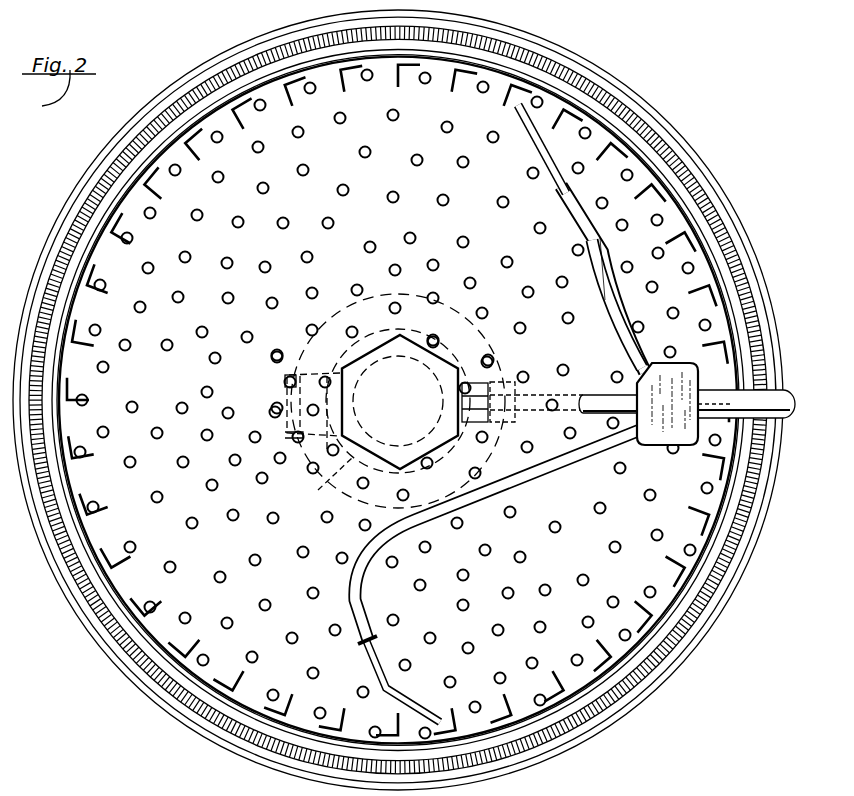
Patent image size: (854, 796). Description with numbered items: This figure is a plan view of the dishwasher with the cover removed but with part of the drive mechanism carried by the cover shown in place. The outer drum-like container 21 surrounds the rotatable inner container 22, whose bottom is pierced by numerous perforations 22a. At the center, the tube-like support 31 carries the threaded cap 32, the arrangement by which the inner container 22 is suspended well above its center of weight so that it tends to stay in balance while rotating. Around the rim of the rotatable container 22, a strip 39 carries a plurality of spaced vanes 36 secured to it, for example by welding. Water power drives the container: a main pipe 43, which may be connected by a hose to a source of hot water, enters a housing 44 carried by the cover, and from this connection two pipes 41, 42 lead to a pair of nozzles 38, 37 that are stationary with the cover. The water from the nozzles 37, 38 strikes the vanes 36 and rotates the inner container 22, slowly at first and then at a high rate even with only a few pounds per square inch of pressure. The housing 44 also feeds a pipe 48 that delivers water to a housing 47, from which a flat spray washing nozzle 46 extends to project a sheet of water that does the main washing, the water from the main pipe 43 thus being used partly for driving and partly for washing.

The outer drum-like container 21 is at (116, 153).
The inner container 22 is at (104, 199).
The perforations 22a is at (216, 360).
The vanes 36 is at (104, 245).
The strip 39 is at (72, 304).
The threaded cap 32 is at (428, 372).
The tube-like support 31 is at (490, 368).
The flat spray washing nozzle 46 is at (286, 388).
The housing 47 is at (321, 481).
The pipe 48 is at (604, 395).
The housing 44 is at (663, 447).
The main pipe 43 is at (726, 392).
The pipe 41 is at (592, 255).
The nozzle 38 is at (540, 150).
The pipe 42 is at (556, 462).
The nozzle 37 is at (386, 688).